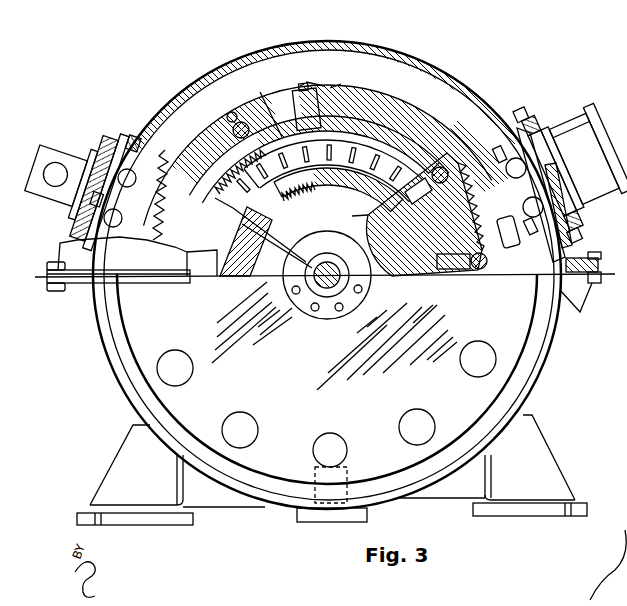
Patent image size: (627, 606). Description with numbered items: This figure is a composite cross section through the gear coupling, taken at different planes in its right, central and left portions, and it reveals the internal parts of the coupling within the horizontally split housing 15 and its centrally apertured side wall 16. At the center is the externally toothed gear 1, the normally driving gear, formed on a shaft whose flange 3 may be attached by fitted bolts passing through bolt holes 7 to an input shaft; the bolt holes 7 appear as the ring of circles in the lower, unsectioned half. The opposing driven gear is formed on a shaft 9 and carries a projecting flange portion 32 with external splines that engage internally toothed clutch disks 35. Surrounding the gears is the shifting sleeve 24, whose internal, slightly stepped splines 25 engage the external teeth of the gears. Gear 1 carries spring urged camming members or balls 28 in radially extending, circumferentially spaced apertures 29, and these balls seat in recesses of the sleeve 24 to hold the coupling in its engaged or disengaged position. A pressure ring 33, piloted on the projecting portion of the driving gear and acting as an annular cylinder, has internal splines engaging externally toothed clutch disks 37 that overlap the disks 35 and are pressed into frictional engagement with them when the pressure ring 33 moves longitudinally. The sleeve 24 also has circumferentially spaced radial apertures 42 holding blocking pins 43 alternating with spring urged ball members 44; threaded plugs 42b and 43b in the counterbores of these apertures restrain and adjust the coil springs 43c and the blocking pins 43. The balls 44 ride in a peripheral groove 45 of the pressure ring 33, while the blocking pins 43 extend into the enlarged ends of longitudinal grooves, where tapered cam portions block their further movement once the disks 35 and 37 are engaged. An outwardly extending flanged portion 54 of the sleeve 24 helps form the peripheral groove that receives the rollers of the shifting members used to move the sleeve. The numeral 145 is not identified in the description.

The externally toothed gear 1 is at (406, 276).
The flange 3 is at (292, 411).
The bolt holes 7 is at (468, 365).
The shaft 9 is at (246, 277).
The horizontally split housing 15 is at (465, 92).
The side wall 16 is at (553, 358).
The shifting sleeve 24 is at (404, 108).
The splines 25 is at (505, 218).
The spring urged camming members or balls 28 is at (448, 169).
The apertures 29 is at (424, 196).
The projecting flange portion 32 is at (325, 188).
The pressure ring 33 is at (327, 250).
The internally toothed clutch disks 35 is at (252, 208).
The externally toothed clutch disks 37 is at (258, 222).
The apertures 42 is at (332, 90).
The threaded plug 42b is at (296, 85).
The blocking pins 43 is at (305, 123).
The threaded plug 43b is at (309, 86).
The coil springs 43c is at (239, 121).
The spring urged camming members or ball members 44 is at (247, 145).
The peripheral groove 45 is at (240, 172).
The flanged portion 54 is at (510, 160).
The teeth 145 is at (300, 190).